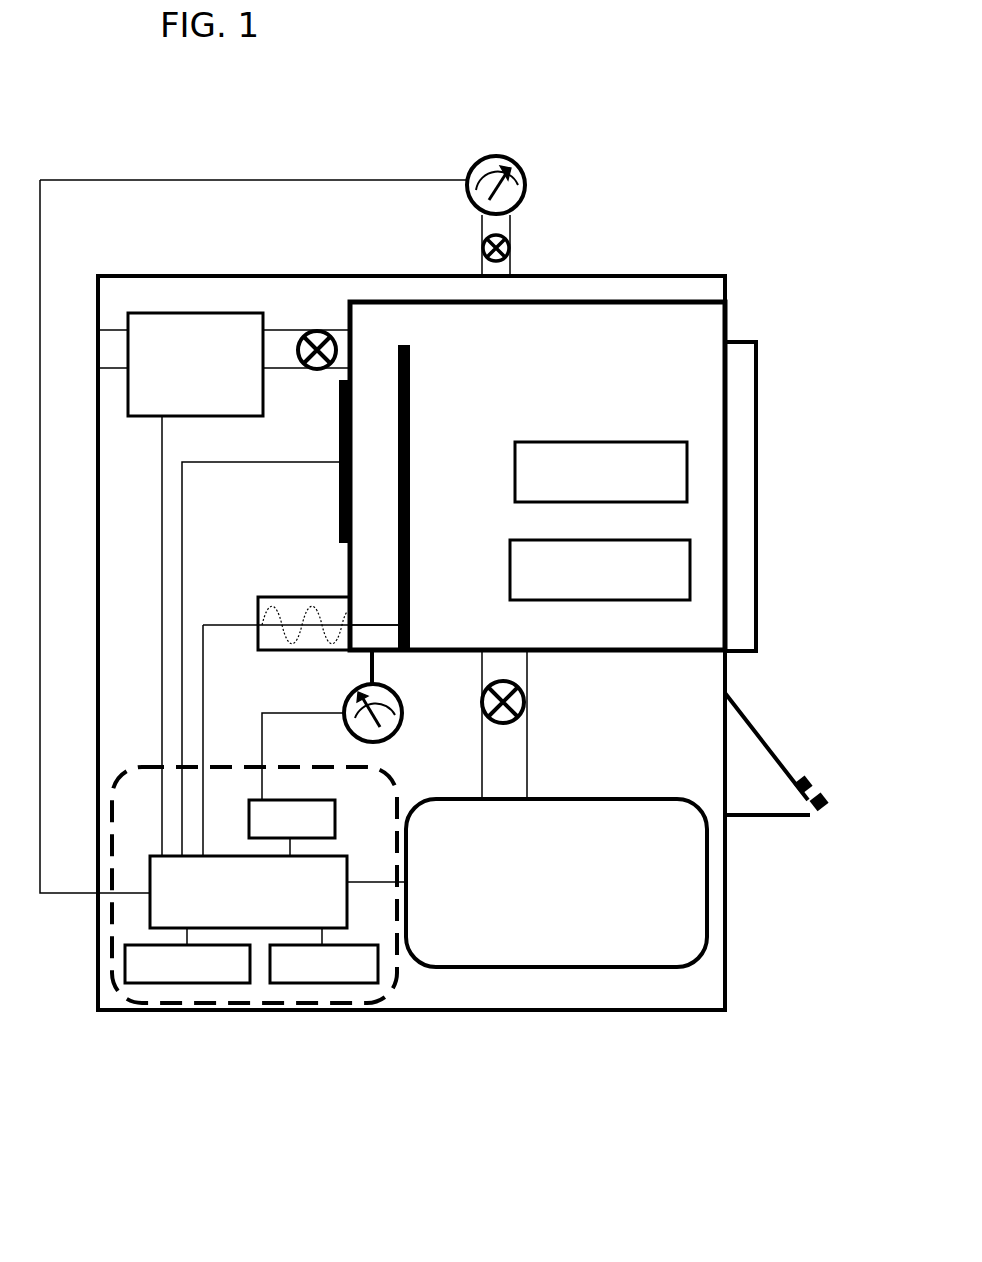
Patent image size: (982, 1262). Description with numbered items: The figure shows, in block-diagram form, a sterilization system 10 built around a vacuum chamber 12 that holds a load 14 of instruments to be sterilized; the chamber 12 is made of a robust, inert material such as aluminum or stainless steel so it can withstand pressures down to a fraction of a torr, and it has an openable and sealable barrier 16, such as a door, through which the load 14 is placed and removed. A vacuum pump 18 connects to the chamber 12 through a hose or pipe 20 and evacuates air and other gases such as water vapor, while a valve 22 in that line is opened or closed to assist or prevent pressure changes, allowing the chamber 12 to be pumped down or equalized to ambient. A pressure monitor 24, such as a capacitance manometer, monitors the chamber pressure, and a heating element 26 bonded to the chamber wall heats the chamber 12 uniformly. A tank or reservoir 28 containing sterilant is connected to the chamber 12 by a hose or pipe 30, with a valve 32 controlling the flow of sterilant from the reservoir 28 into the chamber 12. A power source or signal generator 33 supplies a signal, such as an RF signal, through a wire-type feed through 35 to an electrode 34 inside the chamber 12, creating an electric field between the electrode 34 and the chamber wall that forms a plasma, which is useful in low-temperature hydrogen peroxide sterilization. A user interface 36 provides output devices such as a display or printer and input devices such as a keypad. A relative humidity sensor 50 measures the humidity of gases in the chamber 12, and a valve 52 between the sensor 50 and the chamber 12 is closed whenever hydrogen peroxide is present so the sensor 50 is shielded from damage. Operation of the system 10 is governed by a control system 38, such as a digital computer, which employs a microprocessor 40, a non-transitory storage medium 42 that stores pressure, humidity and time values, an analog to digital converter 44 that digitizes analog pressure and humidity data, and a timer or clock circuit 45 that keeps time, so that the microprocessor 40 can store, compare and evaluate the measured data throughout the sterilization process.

The sterilization system 10 is at (182, 145).
The vacuum chamber 12 is at (635, 300).
The load 14 is at (653, 502).
The openable and sealable barrier 16 is at (756, 390).
The vacuum pump 18 is at (178, 313).
The hose or pipe 20 is at (275, 326).
The valve 22 is at (316, 328).
The pressure monitor 24 is at (352, 690).
The heating element 26 is at (340, 420).
The tank or reservoir 28 is at (523, 967).
The hose or pipe 30 is at (527, 665).
The valve 32 is at (530, 702).
The power source and/or signal generator 33 is at (278, 597).
The electrode 34 is at (412, 388).
The feed through 35 is at (357, 626).
The user interface 36 is at (770, 745).
The control system 38 is at (125, 990).
The microprocessor 40 is at (150, 878).
The non-transitory storage medium 42 is at (203, 985).
The analog to digital converter 44 is at (249, 820).
The timer or clock circuit 45 is at (330, 985).
The relative humidity sensor 50 is at (520, 168).
The valve 52 is at (511, 248).